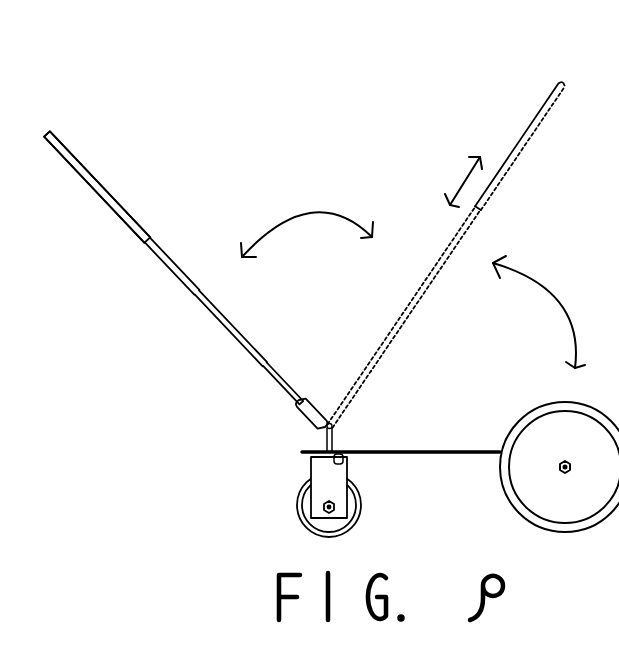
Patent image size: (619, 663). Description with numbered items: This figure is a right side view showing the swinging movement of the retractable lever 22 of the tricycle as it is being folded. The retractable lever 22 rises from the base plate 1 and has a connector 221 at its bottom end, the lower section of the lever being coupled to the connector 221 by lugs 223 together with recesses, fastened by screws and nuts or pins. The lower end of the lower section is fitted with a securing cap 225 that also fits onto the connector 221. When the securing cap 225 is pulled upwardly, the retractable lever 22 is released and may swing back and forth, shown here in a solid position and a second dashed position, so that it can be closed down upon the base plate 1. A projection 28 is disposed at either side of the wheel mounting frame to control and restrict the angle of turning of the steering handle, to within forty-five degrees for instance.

The base plate 1 is at (408, 450).
The retractable lever 22 is at (170, 226).
The connector 221 is at (75, 224).
The lugs 223 is at (314, 424).
The securing cap 225 is at (313, 405).
The projection 28 is at (345, 458).